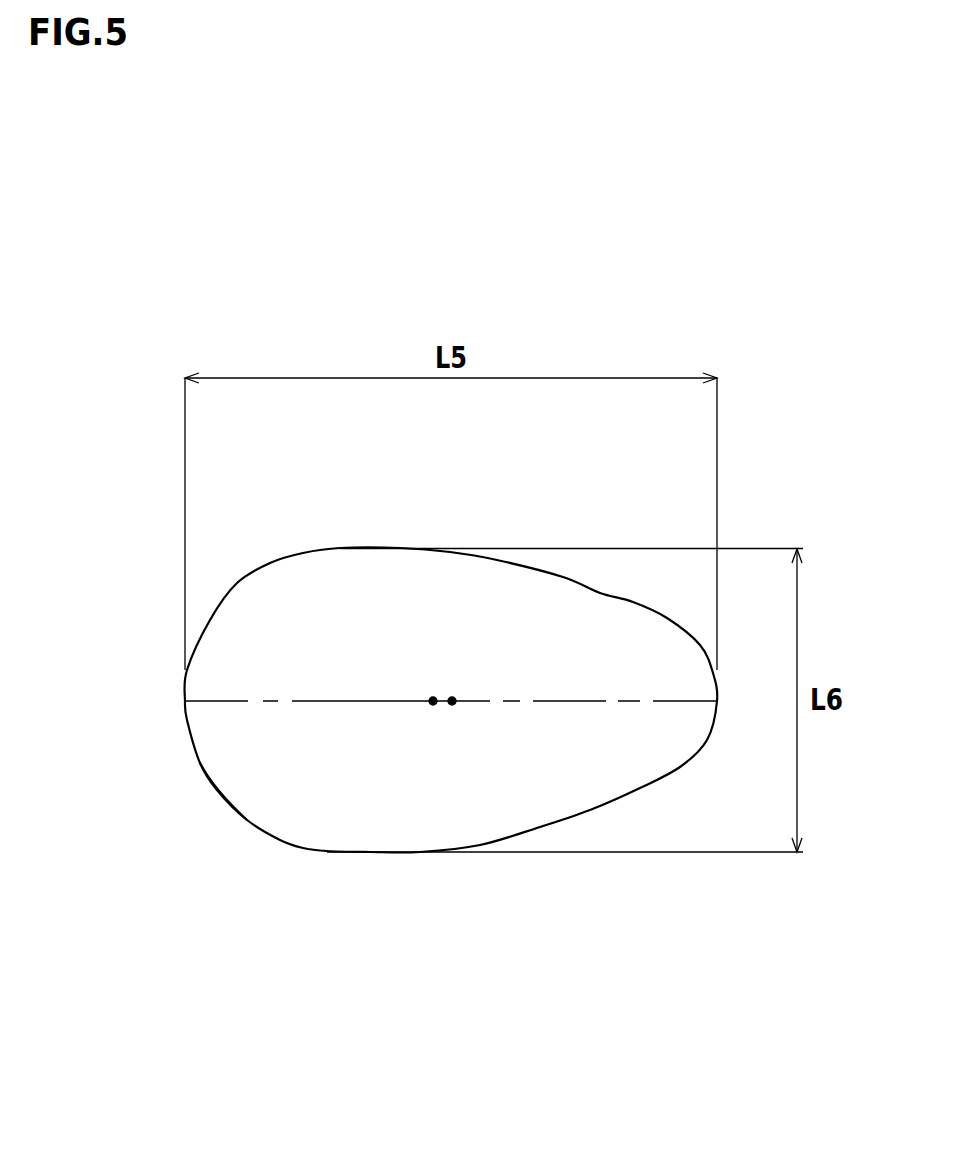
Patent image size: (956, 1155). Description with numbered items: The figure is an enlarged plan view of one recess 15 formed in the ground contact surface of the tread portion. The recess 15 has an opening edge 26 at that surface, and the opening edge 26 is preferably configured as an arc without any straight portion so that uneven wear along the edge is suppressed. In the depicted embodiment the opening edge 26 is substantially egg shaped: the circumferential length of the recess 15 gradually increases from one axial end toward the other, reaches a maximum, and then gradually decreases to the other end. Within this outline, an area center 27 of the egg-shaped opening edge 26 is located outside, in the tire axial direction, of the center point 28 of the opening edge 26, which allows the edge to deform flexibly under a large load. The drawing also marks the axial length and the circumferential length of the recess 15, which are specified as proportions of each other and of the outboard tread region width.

The recess 15 is at (289, 587).
The opening edge 26 is at (217, 788).
The area center 27 is at (433, 701).
The center point 28 is at (452, 701).